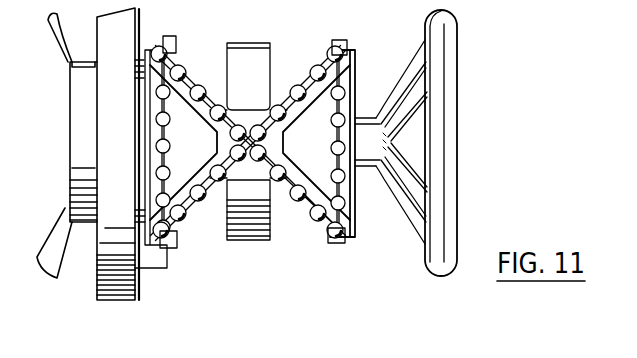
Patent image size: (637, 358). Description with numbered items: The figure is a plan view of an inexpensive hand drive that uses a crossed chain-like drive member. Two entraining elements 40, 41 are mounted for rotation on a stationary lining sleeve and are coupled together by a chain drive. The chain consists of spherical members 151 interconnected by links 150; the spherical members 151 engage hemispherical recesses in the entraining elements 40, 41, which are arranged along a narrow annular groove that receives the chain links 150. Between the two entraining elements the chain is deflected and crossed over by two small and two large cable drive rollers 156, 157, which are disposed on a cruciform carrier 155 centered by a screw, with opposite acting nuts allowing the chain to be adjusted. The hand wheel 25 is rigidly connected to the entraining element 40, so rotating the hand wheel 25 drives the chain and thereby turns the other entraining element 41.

The hand wheel 25 is at (427, 263).
The entraining element 40 is at (348, 83).
The entraining element 41 is at (153, 135).
The links 150 is at (290, 106).
The spherical members 151 is at (268, 107).
The cruciform carrier 155 is at (285, 198).
The small cable drive rollers 156 is at (173, 44).
The large cable drive rollers 157 is at (340, 38).